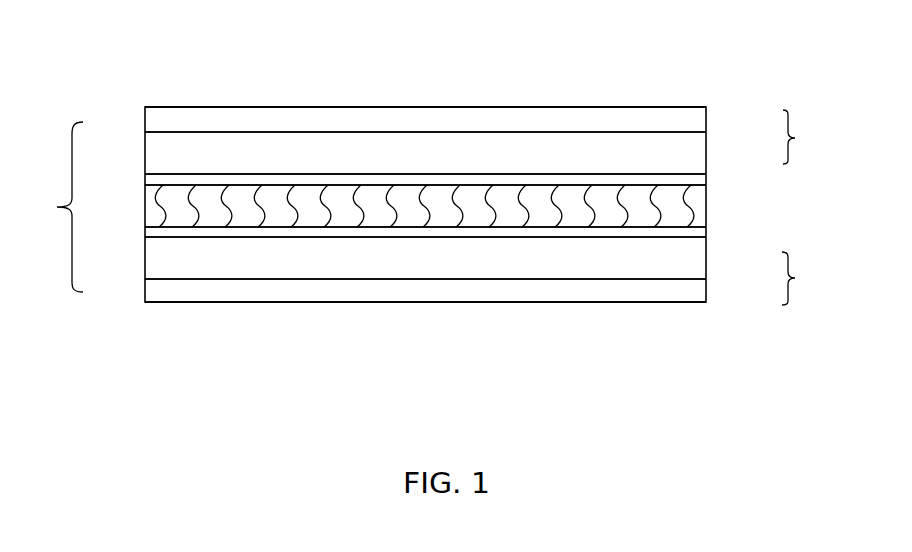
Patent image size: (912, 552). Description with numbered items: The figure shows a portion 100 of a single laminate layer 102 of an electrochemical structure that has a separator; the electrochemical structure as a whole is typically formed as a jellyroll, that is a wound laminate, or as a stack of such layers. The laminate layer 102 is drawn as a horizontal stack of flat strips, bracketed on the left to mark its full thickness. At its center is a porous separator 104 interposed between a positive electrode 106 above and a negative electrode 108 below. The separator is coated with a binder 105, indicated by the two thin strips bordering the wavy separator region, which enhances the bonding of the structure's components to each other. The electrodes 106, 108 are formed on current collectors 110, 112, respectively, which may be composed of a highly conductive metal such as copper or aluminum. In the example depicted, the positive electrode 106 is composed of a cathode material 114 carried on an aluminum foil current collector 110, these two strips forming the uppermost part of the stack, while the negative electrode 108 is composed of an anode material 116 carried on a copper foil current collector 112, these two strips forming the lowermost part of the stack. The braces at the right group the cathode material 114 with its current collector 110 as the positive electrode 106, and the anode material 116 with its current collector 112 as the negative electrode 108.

The portion 100 is at (105, 72).
The single laminate layer 102 is at (49, 207).
The porous separator 104 is at (700, 211).
The binder 105 is at (147, 183).
The positive electrode 106 is at (489, 140).
The negative electrode 108 is at (489, 271).
The current collector 110 is at (700, 121).
The current collector 112 is at (700, 296).
The cathode material 114 is at (700, 157).
The anode material 116 is at (700, 263).